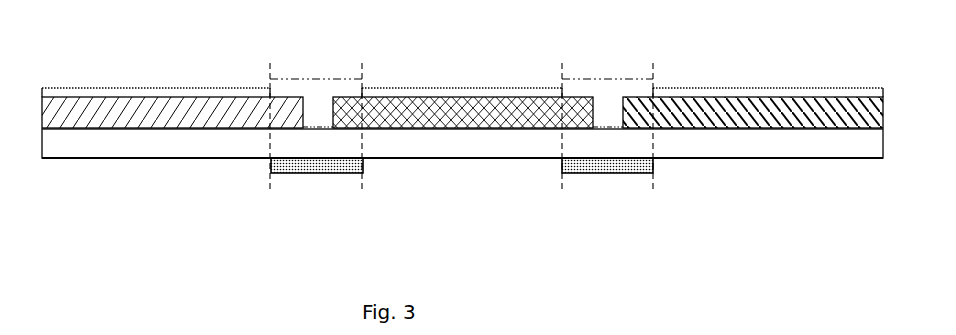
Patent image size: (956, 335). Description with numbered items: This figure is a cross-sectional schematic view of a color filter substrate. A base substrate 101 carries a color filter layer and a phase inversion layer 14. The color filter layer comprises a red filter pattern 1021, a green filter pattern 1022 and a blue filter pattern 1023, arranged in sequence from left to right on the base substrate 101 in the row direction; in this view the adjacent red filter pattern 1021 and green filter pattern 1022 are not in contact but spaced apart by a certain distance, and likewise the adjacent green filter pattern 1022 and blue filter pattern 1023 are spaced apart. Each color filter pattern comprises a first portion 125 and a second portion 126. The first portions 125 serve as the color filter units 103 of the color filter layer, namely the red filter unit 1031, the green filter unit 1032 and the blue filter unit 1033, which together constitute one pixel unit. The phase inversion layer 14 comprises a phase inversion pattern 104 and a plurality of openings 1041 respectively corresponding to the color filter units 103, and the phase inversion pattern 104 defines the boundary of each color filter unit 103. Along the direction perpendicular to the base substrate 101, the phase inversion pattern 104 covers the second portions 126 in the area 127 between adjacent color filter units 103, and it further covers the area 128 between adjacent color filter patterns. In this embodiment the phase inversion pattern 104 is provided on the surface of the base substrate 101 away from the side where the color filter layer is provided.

The base substrate 101 is at (768, 138).
The color filter unit 103 is at (462, 62).
The red filter unit 1031 is at (126, 88).
The green filter unit 1032 is at (470, 88).
The blue filter unit 1033 is at (750, 88).
The red filter pattern 1021 is at (110, 191).
The green filter pattern 1022 is at (452, 191).
The blue filter pattern 1023 is at (790, 194).
The first portion 125 is at (53, 115).
The second portion 126 is at (285, 103).
The area between adjacent color filter units 127 is at (335, 78).
The area between adjacent color filter patterns 128 is at (313, 110).
The phase inversion layer 14 is at (368, 223).
The phase inversion pattern 104 is at (297, 173).
The opening 1041 is at (242, 168).